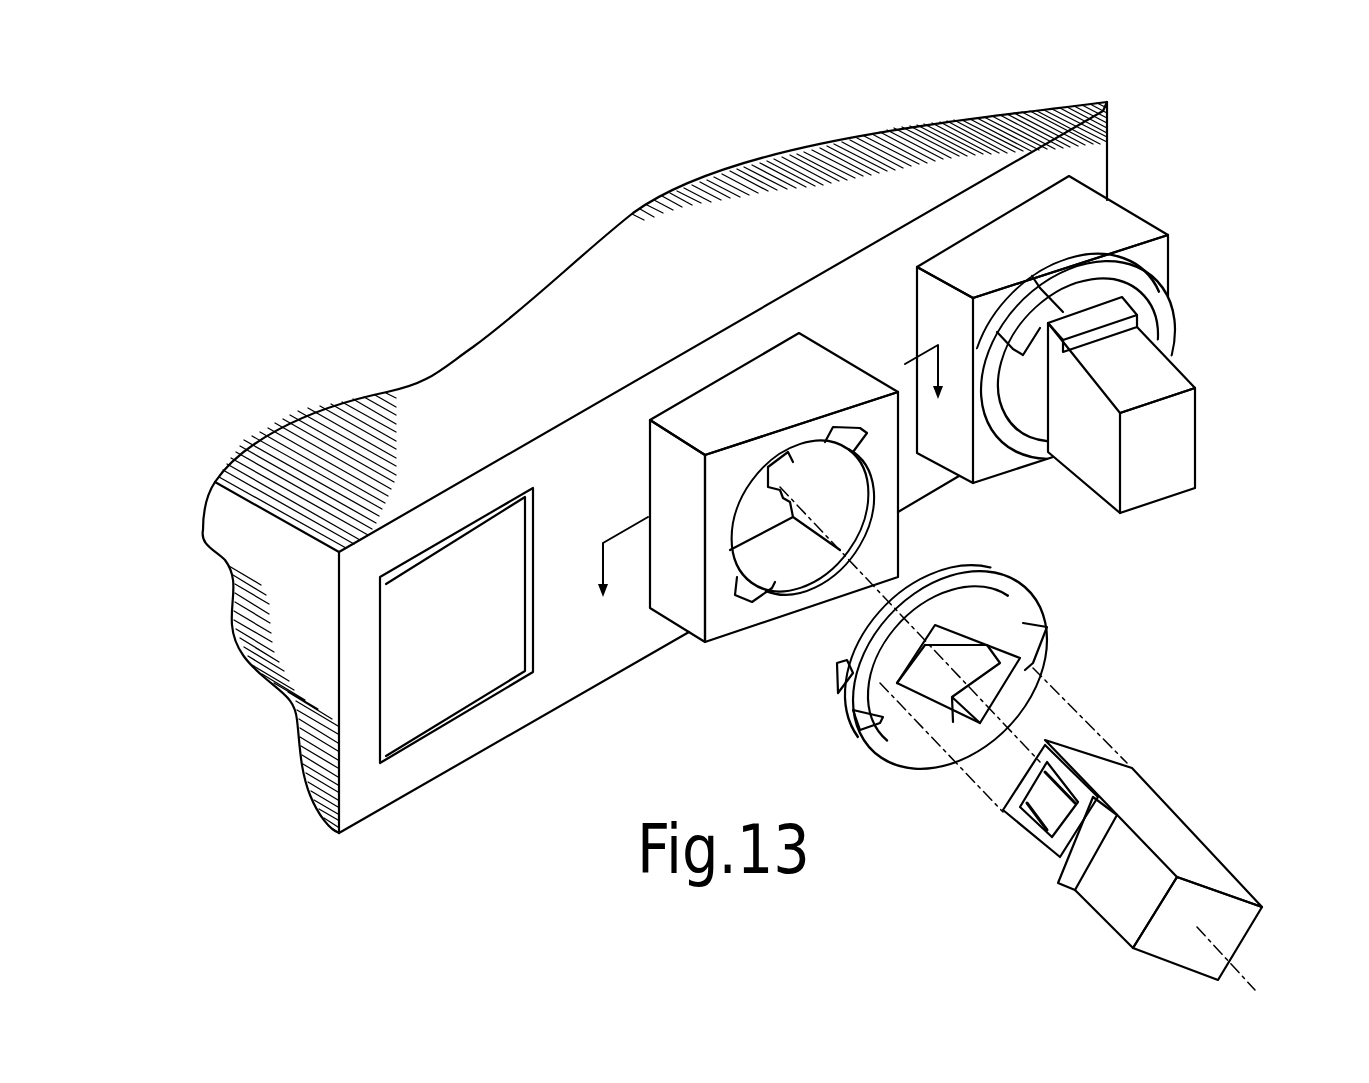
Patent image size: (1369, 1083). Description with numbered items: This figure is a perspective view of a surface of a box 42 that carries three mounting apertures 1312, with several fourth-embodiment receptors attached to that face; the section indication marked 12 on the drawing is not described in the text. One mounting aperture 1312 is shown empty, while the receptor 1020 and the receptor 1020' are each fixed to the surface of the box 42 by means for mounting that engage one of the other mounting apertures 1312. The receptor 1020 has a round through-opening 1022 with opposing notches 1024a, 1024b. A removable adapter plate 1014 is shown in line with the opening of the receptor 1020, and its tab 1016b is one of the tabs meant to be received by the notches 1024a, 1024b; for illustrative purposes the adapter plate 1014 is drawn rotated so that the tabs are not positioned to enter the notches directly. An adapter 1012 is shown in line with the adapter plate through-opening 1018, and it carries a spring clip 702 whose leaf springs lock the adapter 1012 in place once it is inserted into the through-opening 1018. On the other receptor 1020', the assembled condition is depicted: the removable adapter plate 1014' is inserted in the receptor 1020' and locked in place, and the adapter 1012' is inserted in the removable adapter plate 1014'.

The box 42 is at (612, 476).
The mounting aperture 1312 is at (482, 631).
The section line of FIG. 12 is at (775, 493).
The receptor 1020 is at (774, 533).
The round through-opening 1022 is at (788, 458).
The notch 1024a is at (858, 432).
The notch 1024b is at (745, 605).
The receptor 1020' is at (1073, 319).
The removable adapter plate 1014' is at (1128, 354).
The adapter 1012' is at (1176, 405).
The removable adapter plate 1014 is at (984, 664).
The adapter plate through-opening 1018 is at (973, 637).
The tab 1016b is at (837, 663).
The spring clip 702 is at (1013, 817).
The adapter 1012 is at (1131, 860).